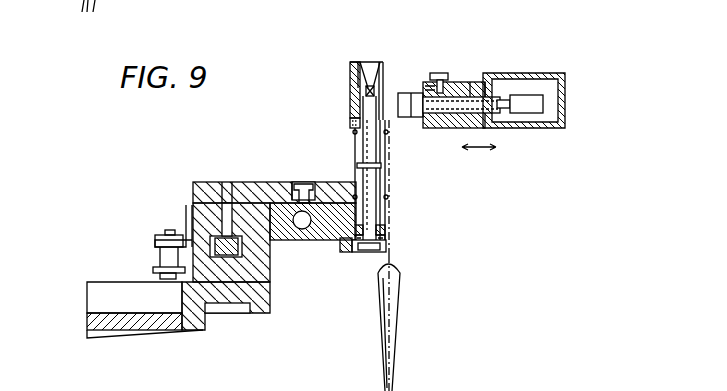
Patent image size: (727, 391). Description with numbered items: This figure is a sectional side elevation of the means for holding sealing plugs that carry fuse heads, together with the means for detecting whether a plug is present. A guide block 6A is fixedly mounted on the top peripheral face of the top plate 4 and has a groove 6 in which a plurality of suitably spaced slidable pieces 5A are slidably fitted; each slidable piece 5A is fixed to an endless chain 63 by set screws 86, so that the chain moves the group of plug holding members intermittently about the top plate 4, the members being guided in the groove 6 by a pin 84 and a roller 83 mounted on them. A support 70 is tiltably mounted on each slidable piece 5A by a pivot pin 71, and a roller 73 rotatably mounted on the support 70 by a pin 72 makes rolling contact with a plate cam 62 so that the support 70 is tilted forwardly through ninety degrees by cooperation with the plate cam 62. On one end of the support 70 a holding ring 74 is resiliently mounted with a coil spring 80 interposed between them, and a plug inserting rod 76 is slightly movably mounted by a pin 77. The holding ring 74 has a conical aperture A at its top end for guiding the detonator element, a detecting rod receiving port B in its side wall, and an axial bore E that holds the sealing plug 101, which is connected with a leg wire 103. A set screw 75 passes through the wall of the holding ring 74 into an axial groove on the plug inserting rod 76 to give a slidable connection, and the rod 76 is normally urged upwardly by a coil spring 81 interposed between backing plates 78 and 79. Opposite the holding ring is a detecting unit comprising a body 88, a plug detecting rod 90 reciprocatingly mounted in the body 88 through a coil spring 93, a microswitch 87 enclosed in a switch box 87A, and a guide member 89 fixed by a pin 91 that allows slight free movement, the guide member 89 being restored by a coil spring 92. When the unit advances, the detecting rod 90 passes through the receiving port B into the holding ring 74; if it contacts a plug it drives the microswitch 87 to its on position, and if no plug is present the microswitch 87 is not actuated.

The top plate 4 is at (190, 320).
The groove 6 is at (212, 240).
The guide block 6A is at (222, 280).
The slidable piece 5A is at (278, 240).
The roller 83 is at (271, 258).
The plate cam 62 is at (238, 186).
The pin 84 is at (223, 202).
The set screw 86 is at (188, 212).
The endless chain 63 is at (158, 243).
The pin 72 is at (302, 186).
The roller 73 is at (283, 198).
The pivot pin 71 is at (303, 229).
The holding ring 74 is at (352, 95).
The set screw 75 is at (352, 122).
The sealing plug 101 is at (366, 102).
The plug inserting rod 76 is at (372, 157).
The pin 77 is at (356, 170).
The coil spring 80 is at (388, 198).
The backing plate 78 is at (385, 229).
The coil spring 81 is at (386, 243).
The backing plate 79 is at (370, 252).
The support 70 is at (338, 236).
The guide member 89 is at (405, 93).
The coil spring 93 is at (428, 126).
The plug detecting rod 90 is at (500, 122).
The pin 91 is at (450, 80).
The body 88 is at (437, 84).
The coil spring 92 is at (476, 82).
The switch box 87A is at (566, 96).
The microswitch 87 is at (532, 112).
The leg wire 103 is at (396, 292).
The conical aperture A is at (366, 72).
The detecting rod receiving port B is at (376, 106).
The axial bore E is at (352, 86).